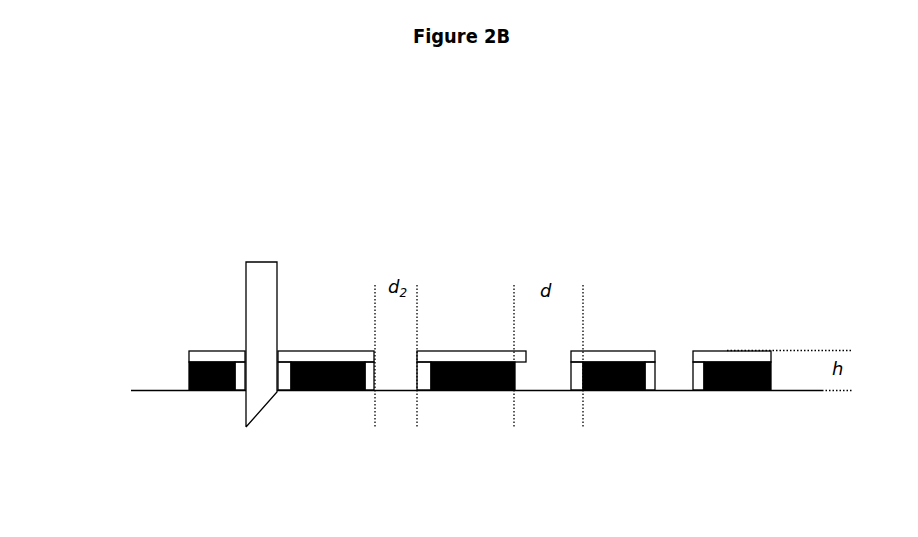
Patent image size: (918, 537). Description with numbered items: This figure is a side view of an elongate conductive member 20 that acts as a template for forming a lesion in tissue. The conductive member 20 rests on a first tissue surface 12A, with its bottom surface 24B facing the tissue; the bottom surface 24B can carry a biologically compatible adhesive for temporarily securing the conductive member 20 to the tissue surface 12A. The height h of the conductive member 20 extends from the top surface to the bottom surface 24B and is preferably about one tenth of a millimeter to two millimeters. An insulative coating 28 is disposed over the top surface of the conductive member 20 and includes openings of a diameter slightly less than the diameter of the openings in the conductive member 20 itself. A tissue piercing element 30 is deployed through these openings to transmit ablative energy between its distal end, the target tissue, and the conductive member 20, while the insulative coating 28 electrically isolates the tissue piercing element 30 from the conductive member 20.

The first tissue surface 12A is at (457, 390).
The conductive member 20 is at (185, 374).
The bottom surface 24B is at (302, 392).
The insulative coating 28 is at (710, 357).
The tissue piercing element 30 is at (230, 288).